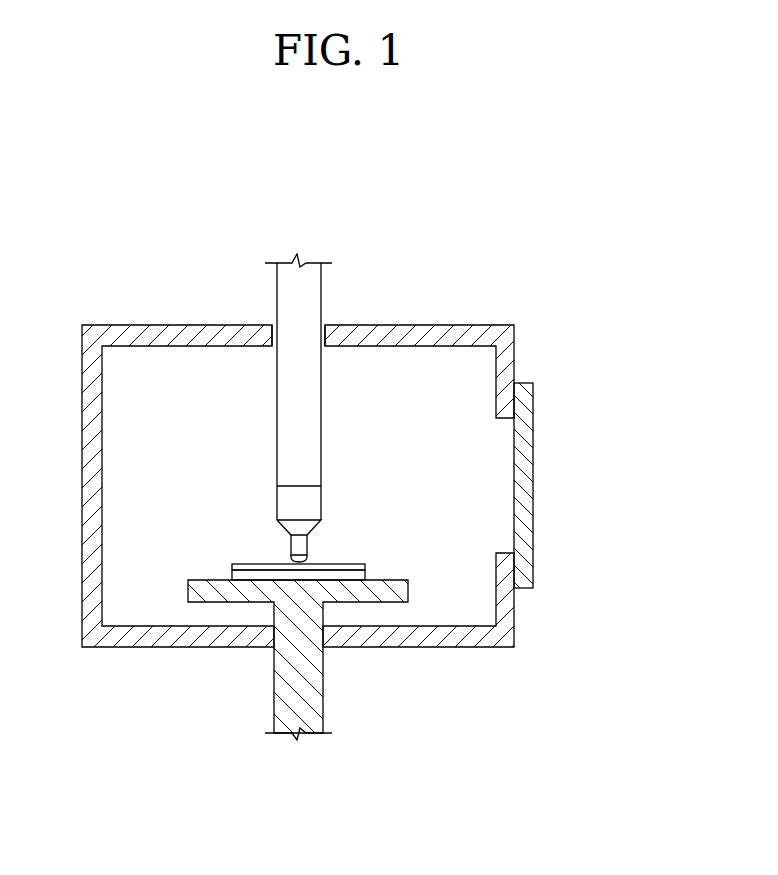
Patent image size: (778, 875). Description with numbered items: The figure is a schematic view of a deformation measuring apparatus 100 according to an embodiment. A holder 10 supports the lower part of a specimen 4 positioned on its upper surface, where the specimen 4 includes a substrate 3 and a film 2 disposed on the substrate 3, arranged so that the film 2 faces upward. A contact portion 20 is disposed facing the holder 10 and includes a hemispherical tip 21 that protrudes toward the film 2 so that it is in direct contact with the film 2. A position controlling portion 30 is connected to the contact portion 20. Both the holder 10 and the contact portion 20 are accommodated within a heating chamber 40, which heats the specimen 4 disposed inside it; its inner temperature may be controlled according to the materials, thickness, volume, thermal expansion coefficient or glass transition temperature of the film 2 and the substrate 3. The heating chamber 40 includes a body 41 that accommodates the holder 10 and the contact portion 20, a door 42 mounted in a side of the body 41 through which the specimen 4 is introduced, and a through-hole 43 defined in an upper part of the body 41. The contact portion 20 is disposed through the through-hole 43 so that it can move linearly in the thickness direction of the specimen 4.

The deformation measuring apparatus 100 is at (349, 490).
The heating chamber 40 is at (353, 502).
The body 41 is at (514, 343).
The door 42 is at (533, 474).
The through-hole 43 is at (304, 338).
The position controlling portion 30 is at (323, 443).
The contact portion 20 is at (310, 552).
The hemispherical tip 21 is at (290, 556).
The specimen 4 is at (331, 550).
The film 2 is at (366, 566).
The substrate 3 is at (317, 564).
The holder 10 is at (408, 592).